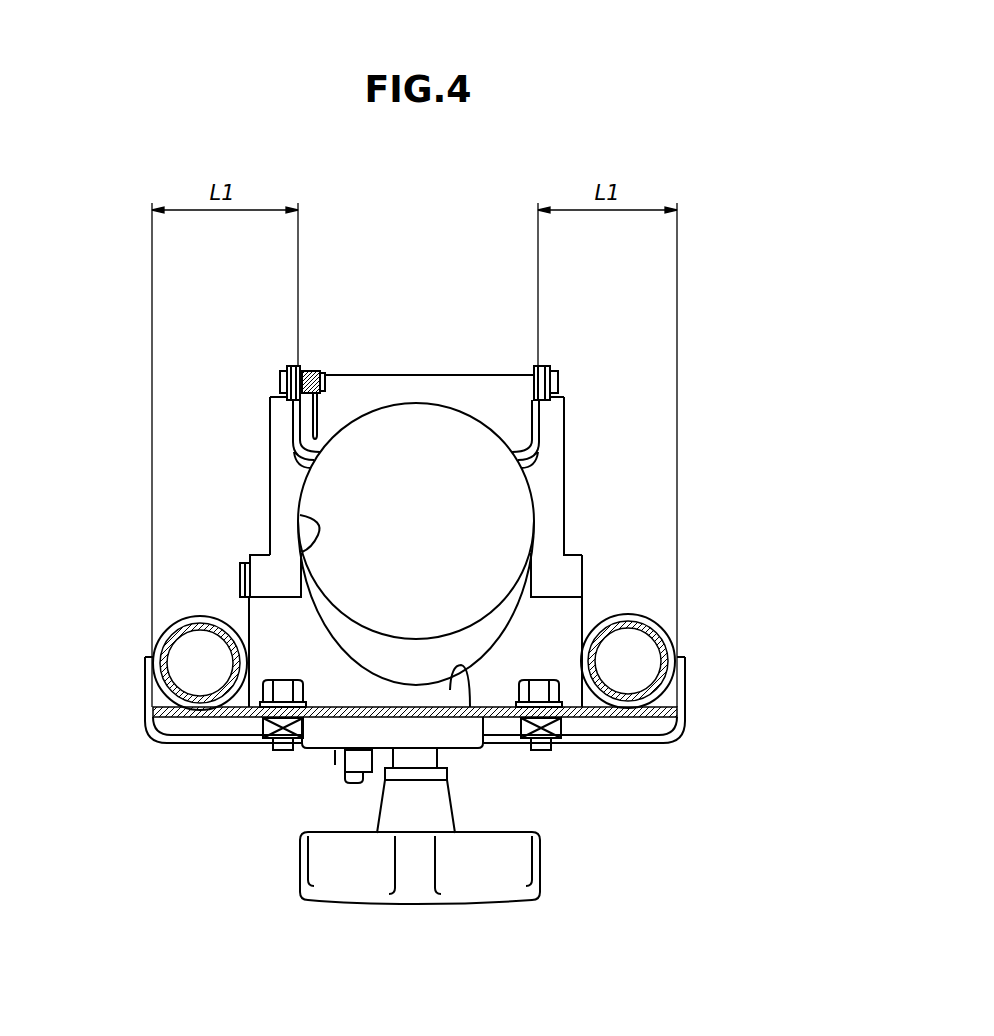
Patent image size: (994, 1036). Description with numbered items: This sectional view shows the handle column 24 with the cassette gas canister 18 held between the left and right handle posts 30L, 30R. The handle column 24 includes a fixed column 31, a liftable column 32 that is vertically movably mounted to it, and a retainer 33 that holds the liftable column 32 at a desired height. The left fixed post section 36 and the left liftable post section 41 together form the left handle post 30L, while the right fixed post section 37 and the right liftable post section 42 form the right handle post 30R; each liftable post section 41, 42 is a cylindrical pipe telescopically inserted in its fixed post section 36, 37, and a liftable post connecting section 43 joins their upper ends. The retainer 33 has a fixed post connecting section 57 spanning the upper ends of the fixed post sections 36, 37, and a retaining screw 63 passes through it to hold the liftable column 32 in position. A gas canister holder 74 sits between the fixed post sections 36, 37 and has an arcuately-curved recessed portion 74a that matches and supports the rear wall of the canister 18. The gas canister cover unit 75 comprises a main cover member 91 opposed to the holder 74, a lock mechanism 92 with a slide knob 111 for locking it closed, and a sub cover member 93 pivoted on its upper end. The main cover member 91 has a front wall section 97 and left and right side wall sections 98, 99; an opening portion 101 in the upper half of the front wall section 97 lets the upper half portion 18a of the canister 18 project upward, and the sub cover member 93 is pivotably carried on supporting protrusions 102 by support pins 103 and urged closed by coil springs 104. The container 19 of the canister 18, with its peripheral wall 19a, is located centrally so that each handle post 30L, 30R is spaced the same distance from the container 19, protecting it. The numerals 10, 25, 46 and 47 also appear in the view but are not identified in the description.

The vehicle body mounting structure 10 is at (250, 93).
The cassette gas canister 18 is at (537, 497).
The upper half portion 18a is at (525, 580).
The container 19 is at (537, 545).
The peripheral wall 19a is at (405, 678).
The handle column 24 is at (780, 522).
The mounting assembly 25 is at (443, 320).
The left handle post 30L is at (150, 716).
The right handle post 30R is at (673, 727).
The fixed column 31 is at (627, 613).
The liftable column 32 is at (672, 639).
The retainer 33 is at (432, 901).
The left fixed post section 36 is at (157, 630).
The right fixed post section 37 is at (652, 625).
The left liftable post section 41 is at (158, 652).
The right liftable post section 42 is at (668, 715).
The liftable post connecting section 43 is at (176, 716).
The upper nut 46 is at (283, 681).
The lower nut 47 is at (280, 738).
The fixed post connecting section 57 is at (640, 745).
The retaining screw 63 is at (356, 886).
The gas canister holder 74 is at (496, 708).
The arcuately-curved recessed portion 74a is at (468, 712).
The gas canister cover unit 75 is at (395, 363).
The main cover member 91 is at (568, 410).
The lock mechanism 92 is at (241, 555).
The sub cover member 93 is at (497, 373).
The front wall section 97 is at (552, 448).
The left side wall section 98 is at (268, 453).
The right side wall section 99 is at (563, 497).
The opening portion 101 is at (300, 515).
The supporting protrusions 102 is at (287, 365).
The support pins 103 is at (280, 380).
The coil springs 104 is at (307, 370).
The slide knob 111 is at (240, 578).